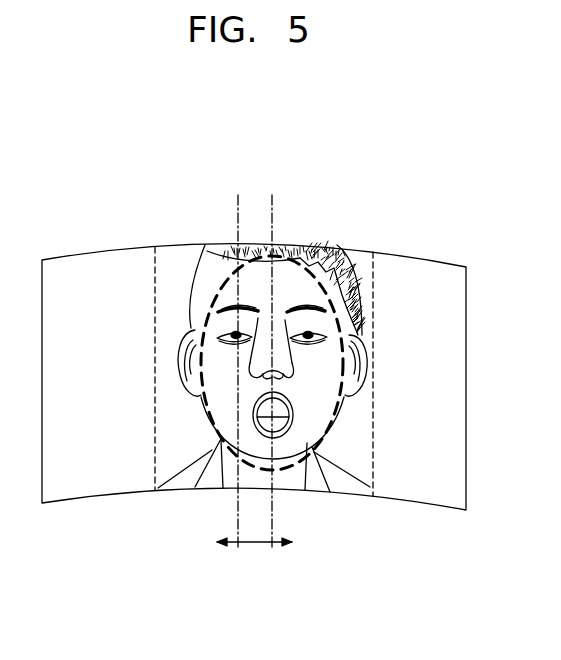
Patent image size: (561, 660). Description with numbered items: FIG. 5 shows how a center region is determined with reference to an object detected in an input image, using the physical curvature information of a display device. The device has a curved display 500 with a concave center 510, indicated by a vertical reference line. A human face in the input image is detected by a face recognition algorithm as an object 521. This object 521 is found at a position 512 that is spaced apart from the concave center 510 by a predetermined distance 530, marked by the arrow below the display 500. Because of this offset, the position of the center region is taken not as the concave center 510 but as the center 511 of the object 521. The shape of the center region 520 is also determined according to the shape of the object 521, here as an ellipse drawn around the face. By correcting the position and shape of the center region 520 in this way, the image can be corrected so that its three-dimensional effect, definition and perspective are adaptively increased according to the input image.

The display 500 is at (429, 262).
The concave center 510 is at (237, 202).
The center of the object 511 is at (272, 200).
The position 512 is at (155, 354).
The center region 520 is at (332, 430).
The object 521 is at (358, 297).
The predetermined distance 530 is at (253, 542).